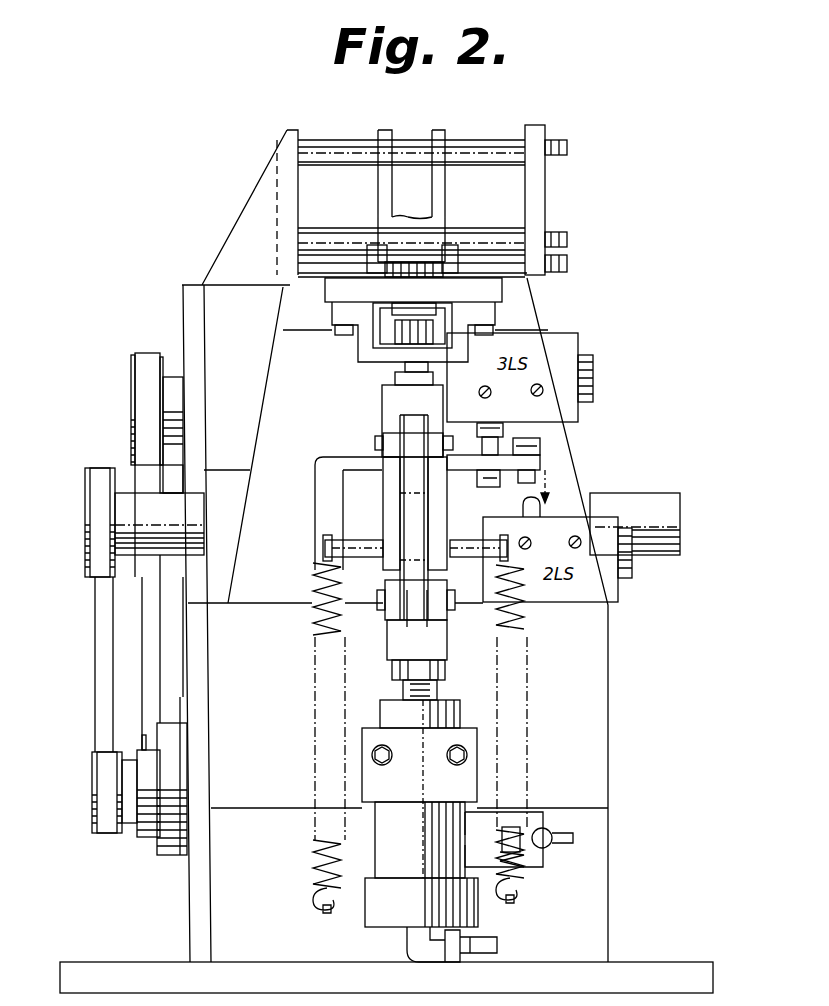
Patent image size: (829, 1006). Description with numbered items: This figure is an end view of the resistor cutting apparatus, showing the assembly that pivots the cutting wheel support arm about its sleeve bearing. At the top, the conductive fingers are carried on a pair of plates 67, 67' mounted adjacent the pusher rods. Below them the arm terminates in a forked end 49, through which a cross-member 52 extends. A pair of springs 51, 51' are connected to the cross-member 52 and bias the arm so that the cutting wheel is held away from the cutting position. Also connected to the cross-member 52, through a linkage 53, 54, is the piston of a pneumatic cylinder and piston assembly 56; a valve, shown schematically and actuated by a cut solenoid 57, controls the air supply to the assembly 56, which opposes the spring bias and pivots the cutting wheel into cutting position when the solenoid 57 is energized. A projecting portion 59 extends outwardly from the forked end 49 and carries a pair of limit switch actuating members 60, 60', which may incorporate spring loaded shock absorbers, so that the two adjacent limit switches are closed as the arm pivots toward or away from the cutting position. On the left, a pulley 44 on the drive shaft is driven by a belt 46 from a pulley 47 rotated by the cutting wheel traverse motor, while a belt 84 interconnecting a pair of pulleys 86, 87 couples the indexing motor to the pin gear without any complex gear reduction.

The additional pulley 44 is at (87, 492).
The belt 46 is at (98, 620).
The pulley 47 is at (92, 783).
The forked end 49 is at (392, 520).
The spring 51 is at (305, 738).
The spring 51' is at (535, 734).
The cross-member 52 is at (353, 540).
The linkage 53 is at (432, 612).
The linkage 54 is at (442, 650).
The pneumatic cylinder and piston assembly 56 is at (482, 797).
The cut solenoid 57 is at (505, 850).
The projecting portion 59 is at (533, 457).
The limit switch actuating member 60 is at (570, 489).
The limit switch actuating member 60' is at (504, 415).
The plate 67 is at (368, 196).
The plate 67' is at (439, 196).
The belt 84 is at (158, 665).
The pulley 86 is at (140, 743).
The pulley 87 is at (135, 392).